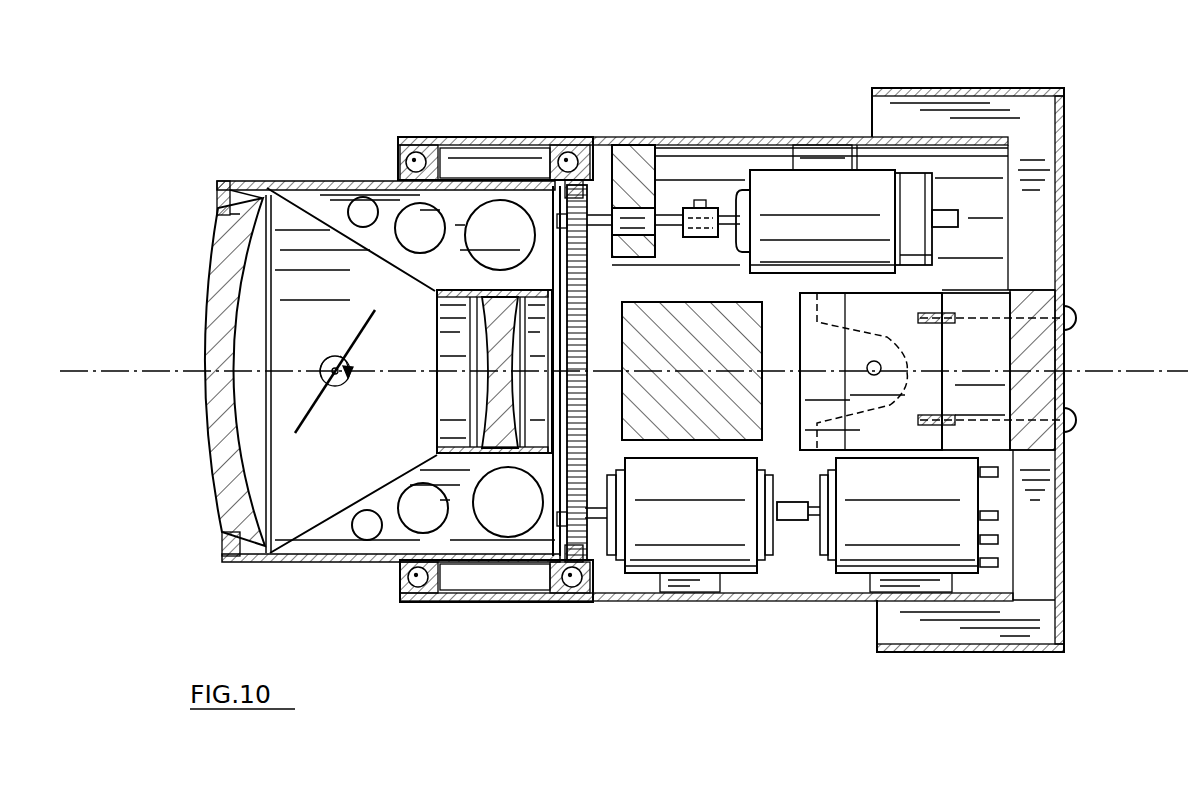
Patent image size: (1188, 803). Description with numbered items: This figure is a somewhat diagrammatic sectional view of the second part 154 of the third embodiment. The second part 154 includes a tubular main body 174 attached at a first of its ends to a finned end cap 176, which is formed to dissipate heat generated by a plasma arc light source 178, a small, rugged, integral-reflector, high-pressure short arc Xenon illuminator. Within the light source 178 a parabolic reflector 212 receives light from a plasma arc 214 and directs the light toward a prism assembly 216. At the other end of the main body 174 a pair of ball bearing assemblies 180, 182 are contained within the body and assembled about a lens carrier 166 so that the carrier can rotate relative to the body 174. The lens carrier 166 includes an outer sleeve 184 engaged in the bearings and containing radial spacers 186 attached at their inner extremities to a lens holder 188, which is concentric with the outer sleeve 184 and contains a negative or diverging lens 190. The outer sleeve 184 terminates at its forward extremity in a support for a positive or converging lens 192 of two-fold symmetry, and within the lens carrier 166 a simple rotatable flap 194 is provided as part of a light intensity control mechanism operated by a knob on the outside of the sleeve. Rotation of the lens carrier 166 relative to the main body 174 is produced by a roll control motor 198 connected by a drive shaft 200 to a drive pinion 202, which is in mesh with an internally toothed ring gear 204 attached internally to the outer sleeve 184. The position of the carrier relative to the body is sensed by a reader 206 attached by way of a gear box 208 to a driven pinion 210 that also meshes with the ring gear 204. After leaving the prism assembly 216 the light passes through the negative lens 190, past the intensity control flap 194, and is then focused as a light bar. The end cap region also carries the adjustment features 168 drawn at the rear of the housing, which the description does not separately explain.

The second part 154 is at (824, 97).
The lens carrier 166 is at (325, 168).
The adjustment knobs 168 is at (1133, 358).
The tubular main body 174 is at (650, 180).
The finned end cap 176 is at (992, 110).
The plasma arc light source 178 is at (932, 300).
The ball bearing assembly 180 is at (440, 148).
The ball bearing assembly 182 is at (540, 170).
The outer sleeve 184 is at (378, 178).
The radial spacers 186 is at (308, 198).
The lens holder 188 is at (428, 465).
The negative lens 190 is at (493, 387).
The positive lens 192 is at (205, 465).
The rotatable flap 194 is at (292, 385).
The roll control motor 198 is at (773, 185).
The drive shaft 200 is at (668, 216).
The drive pinion 202 is at (605, 182).
The internally toothed ring gear 204 is at (590, 322).
The reader 206 is at (865, 530).
The gear box 208 is at (695, 530).
The driven pinion 210 is at (590, 512).
The parabolic reflector 212 is at (907, 362).
The plasma arc 214 is at (877, 360).
The prism assembly 216 is at (673, 325).